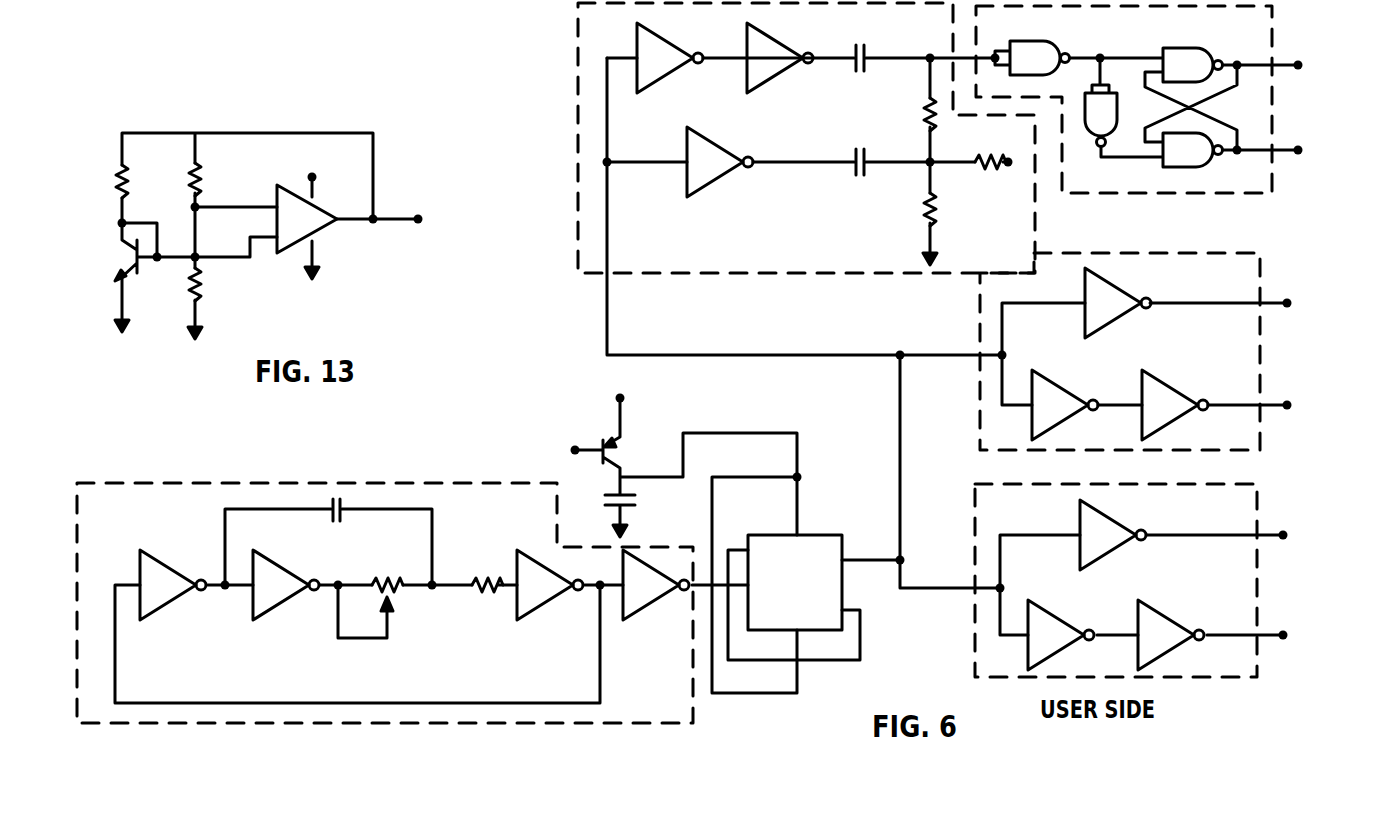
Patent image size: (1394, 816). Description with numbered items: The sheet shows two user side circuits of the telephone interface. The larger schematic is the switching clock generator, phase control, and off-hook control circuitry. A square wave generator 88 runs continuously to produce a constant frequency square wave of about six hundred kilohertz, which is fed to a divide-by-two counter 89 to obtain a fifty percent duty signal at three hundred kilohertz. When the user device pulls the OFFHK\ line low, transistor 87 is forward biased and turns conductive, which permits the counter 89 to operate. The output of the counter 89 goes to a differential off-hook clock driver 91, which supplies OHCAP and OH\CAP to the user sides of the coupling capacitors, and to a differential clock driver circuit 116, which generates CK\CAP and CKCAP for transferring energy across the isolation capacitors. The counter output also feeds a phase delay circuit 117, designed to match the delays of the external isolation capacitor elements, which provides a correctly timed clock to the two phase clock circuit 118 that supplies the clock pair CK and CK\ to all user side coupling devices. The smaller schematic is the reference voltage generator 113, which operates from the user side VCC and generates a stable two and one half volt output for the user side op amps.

In FIG. 13, the reference voltage generator 113 is at (396, 147).
In FIG. 6, the phase delay circuit 117 is at (806, 138).
In FIG. 6, the two phase clock circuit 118 is at (1165, 99).
In FIG. 6, the differential clock driver circuit 116 is at (1185, 351).
In FIG. 6, the differential off-hook clock driver 91 is at (1182, 580).
In FIG. 6, the square wave generator 88 is at (412, 603).
In FIG. 6, the transistor 87 is at (610, 443).
In FIG. 6, the divide-by-two counter 89 is at (823, 575).